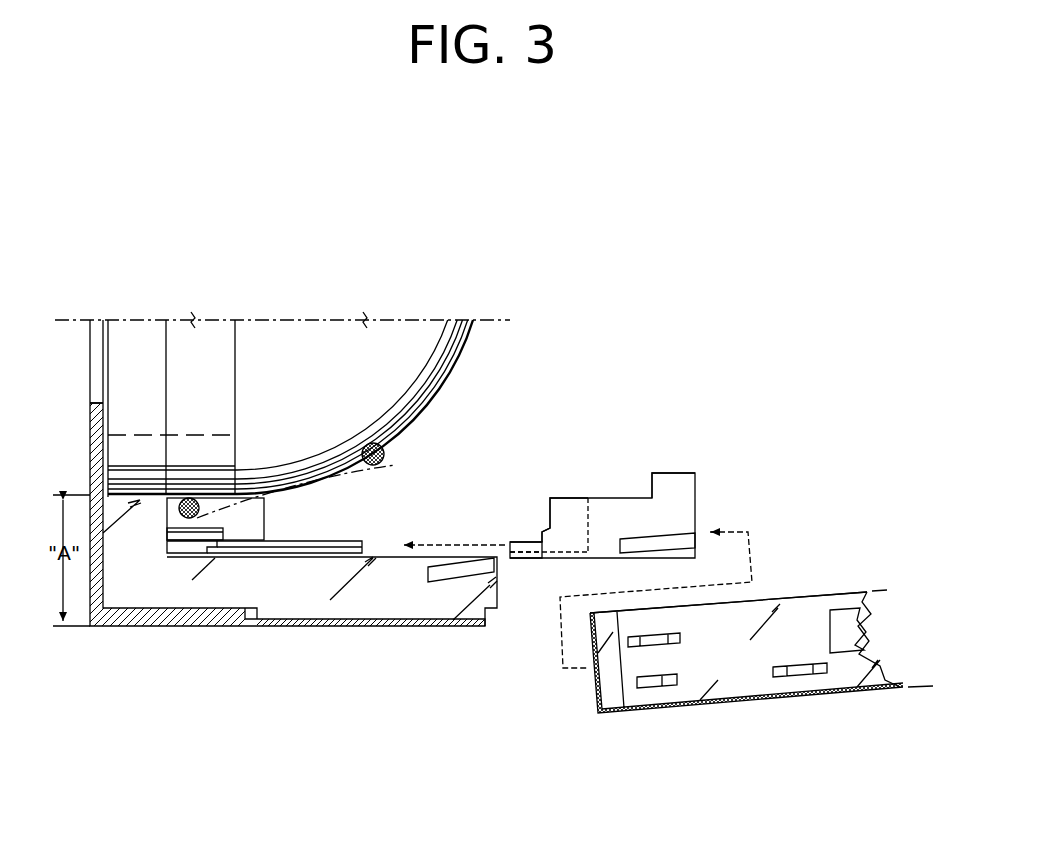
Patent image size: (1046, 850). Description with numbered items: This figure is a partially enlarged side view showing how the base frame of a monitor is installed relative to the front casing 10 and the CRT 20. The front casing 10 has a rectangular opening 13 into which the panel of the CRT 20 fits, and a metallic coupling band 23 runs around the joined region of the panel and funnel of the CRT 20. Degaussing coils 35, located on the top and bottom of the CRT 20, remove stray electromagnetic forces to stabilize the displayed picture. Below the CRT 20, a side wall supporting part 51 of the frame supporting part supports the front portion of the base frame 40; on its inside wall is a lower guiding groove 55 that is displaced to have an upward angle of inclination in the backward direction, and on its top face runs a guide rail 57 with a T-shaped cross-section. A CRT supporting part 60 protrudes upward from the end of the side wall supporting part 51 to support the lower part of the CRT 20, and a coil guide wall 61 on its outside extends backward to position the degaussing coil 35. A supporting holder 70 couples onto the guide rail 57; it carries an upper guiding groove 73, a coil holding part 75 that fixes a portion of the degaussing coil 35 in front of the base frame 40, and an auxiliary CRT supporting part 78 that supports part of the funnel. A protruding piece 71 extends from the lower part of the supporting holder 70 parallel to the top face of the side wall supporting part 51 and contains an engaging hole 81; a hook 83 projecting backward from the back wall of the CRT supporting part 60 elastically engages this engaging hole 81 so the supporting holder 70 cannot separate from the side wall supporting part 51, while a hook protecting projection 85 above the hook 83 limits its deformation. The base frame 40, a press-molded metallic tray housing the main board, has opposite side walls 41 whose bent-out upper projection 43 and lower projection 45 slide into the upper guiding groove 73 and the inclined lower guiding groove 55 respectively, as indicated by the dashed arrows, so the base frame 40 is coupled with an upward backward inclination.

The front casing 10 is at (105, 630).
The opening 13 is at (100, 402).
The CRT 20 is at (432, 383).
The coupling band 23 is at (123, 433).
The degaussing coil 35 is at (384, 454).
The base frame 40 is at (643, 716).
The side wall 41 is at (798, 612).
The upper projection 43 is at (657, 642).
The lower projection 45 is at (802, 668).
The side wall supporting part 51 is at (363, 612).
The lower guiding groove 55 is at (445, 573).
The guide rail 57 is at (362, 545).
The CRT supporting part 60 is at (125, 497).
The coil guide wall 61 is at (264, 525).
The supporting holder 70 is at (703, 491).
The protruding piece 71 is at (525, 558).
The upper guiding groove 73 is at (655, 543).
The coil holding part 75 is at (548, 518).
The auxiliary CRT supporting part 78 is at (676, 473).
The engaging hole 81 is at (550, 558).
The hook 83 is at (213, 553).
The hook protecting projection 85 is at (183, 530).